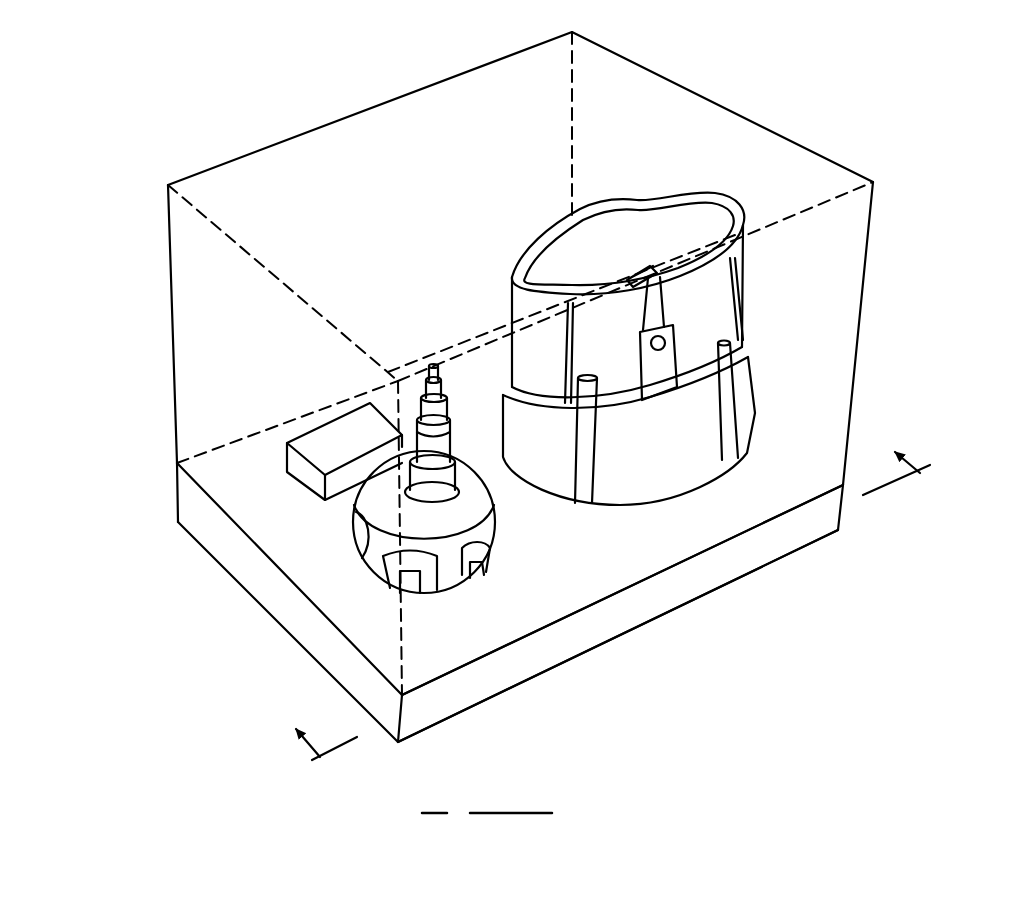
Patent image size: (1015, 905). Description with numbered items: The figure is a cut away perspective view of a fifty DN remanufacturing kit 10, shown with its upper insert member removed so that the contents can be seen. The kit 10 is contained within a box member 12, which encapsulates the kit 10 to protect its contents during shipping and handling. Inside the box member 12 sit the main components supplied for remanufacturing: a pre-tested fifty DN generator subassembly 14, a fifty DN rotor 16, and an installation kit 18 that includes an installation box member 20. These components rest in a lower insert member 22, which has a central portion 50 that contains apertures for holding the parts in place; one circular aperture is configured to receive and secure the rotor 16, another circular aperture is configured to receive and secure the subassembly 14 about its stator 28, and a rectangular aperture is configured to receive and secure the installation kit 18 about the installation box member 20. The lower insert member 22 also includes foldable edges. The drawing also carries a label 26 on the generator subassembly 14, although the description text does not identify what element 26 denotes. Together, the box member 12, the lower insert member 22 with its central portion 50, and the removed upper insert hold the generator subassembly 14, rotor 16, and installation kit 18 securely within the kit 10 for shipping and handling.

The 50 DN remanufacturing kit 10 is at (957, 233).
The box member 12 is at (170, 283).
The 50 DN generator subassembly 14 is at (784, 375).
The 50 DN rotor 16 is at (460, 518).
The installation kit 18 is at (300, 505).
The installation box member 20 is at (310, 445).
The lower insert member 22 is at (702, 535).
The reservoir cup 26 is at (755, 197).
The stator 28 is at (745, 436).
The central portion 50 is at (613, 560).